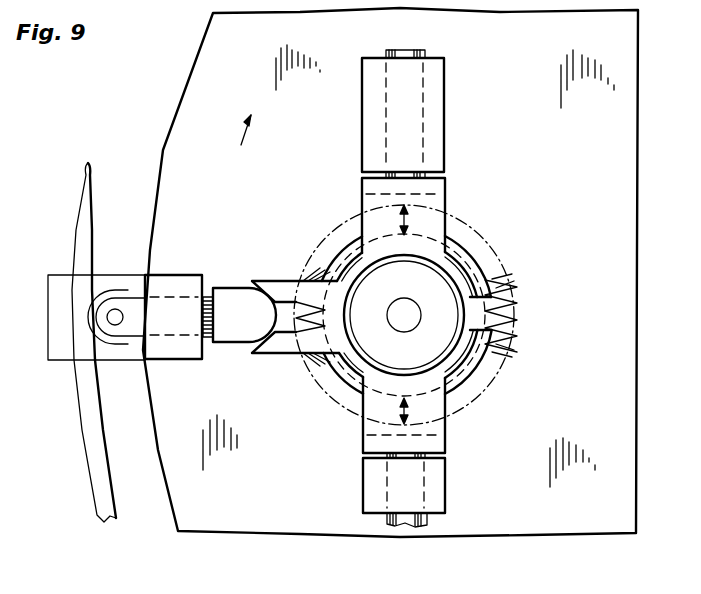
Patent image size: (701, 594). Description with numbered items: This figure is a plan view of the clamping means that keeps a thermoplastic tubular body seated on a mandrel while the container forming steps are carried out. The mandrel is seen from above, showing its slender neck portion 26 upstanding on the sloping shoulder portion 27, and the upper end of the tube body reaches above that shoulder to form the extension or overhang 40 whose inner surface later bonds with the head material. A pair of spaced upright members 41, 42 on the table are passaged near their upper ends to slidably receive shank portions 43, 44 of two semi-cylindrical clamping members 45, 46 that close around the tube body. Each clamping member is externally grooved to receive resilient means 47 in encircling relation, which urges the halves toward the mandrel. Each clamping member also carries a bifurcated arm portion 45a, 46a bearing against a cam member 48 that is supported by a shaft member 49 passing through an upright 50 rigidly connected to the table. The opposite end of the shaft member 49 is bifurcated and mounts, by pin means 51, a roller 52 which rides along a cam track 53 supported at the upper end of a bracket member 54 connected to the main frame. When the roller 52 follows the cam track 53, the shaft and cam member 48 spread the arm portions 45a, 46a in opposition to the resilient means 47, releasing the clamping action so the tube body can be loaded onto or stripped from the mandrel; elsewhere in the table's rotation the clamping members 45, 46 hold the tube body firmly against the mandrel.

The neck portion 26 is at (427, 301).
The shoulder portion 27 is at (426, 366).
The extension or overhang 40 is at (448, 280).
The upright member 41 is at (440, 122).
The upright member 42 is at (437, 477).
The shank portion 43 is at (425, 52).
The shank portion 44 is at (430, 521).
The semi-cylindrical clamping member 45 is at (464, 245).
The bifurcated arm portion 45a is at (280, 284).
The semi-cylindrical clamping member 46 is at (467, 386).
The bifurcated arm portion 46a is at (279, 350).
The resilient means 47 is at (512, 307).
The cam member 48 is at (262, 332).
The shaft member 49 is at (137, 308).
The upright 50 is at (170, 282).
The pin means 51 is at (121, 323).
The roller 52 is at (110, 342).
The cam track 53 is at (88, 444).
The bracket member 54 is at (55, 352).